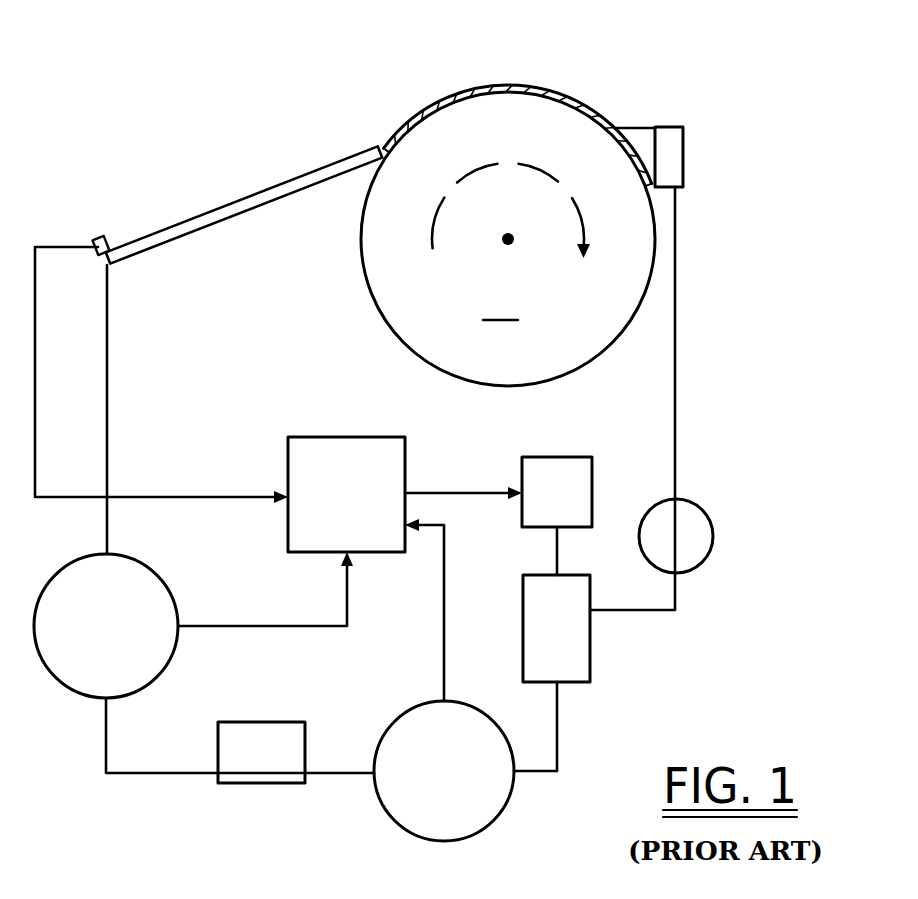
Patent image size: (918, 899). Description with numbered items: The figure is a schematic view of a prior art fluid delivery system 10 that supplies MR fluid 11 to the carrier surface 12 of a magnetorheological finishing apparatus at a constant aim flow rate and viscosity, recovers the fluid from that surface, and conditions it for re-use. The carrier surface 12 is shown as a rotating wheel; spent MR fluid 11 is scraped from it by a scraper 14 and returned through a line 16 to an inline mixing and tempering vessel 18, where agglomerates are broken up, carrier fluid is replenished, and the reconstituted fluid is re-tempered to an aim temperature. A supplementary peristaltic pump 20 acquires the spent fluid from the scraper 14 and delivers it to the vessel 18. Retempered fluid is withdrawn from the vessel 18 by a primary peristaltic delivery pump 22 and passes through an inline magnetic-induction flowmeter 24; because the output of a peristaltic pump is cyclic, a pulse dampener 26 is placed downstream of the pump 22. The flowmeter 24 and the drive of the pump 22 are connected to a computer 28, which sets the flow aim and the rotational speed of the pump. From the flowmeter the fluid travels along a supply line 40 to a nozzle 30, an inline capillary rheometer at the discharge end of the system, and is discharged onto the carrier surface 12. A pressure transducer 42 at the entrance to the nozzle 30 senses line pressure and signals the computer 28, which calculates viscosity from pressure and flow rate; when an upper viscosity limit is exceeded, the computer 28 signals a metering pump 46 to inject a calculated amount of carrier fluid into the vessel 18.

The fluid delivery system 10 is at (752, 260).
The MR fluid 11 is at (540, 87).
The carrier surface 12 is at (587, 110).
The scraper 14 is at (683, 148).
The line 16 is at (675, 490).
The inline mixing and tempering vessel 18 is at (576, 662).
The supplementary peristaltic pump 20 is at (713, 540).
The primary peristaltic delivery pump 22 is at (495, 802).
The inline magnetic-induction flowmeter 24 is at (138, 667).
The pulse dampener 26 is at (260, 785).
The computer 28 is at (320, 447).
The nozzle 30 is at (252, 196).
The supply line 40 is at (110, 367).
The pressure transducer 42 is at (98, 238).
The metering pump 46 is at (580, 483).